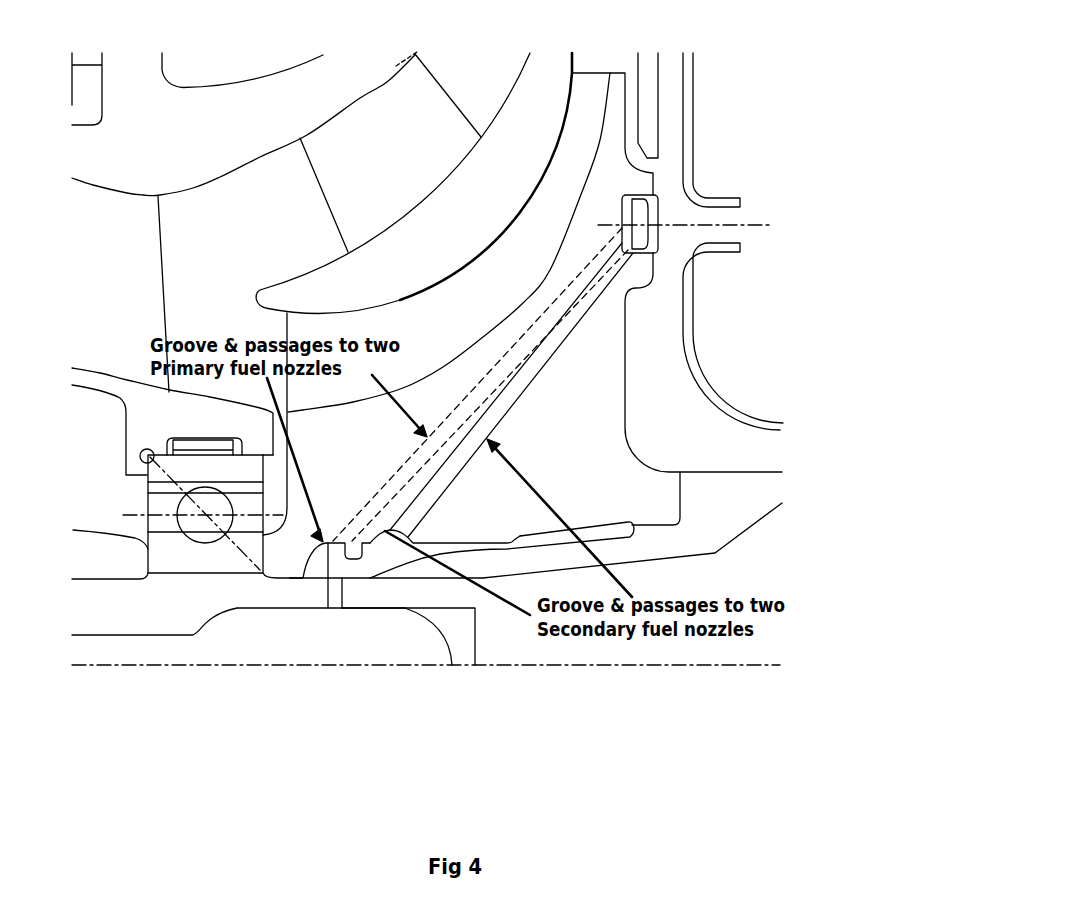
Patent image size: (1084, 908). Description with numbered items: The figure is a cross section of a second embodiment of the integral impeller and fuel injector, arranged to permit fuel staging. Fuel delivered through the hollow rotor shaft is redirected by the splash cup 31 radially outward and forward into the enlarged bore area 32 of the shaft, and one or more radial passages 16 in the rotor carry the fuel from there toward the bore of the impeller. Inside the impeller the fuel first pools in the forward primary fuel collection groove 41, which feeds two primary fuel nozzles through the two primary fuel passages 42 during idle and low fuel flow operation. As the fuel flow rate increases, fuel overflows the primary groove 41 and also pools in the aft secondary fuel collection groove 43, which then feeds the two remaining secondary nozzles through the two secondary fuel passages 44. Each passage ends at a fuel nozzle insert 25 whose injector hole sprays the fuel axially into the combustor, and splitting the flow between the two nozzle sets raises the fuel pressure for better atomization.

The radial passages 16 is at (328, 607).
The fuel nozzle insert 25 is at (653, 215).
The splash cup 31 is at (450, 638).
The enlarged bore area 32 is at (390, 607).
The primary fuel collection groove 41 is at (337, 545).
The primary fuel passages 42 is at (398, 475).
The secondary fuel collection groove 43 is at (385, 550).
The secondary fuel passages 44 is at (537, 352).